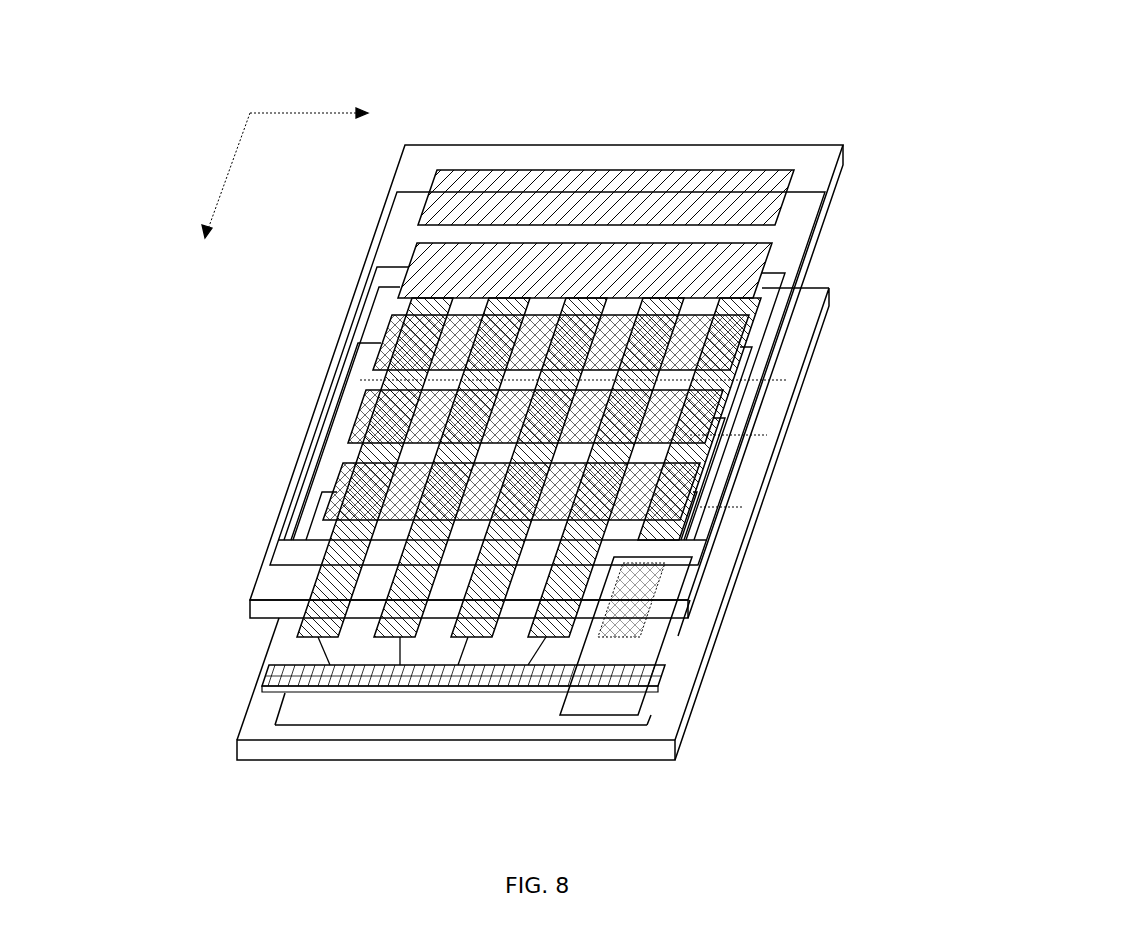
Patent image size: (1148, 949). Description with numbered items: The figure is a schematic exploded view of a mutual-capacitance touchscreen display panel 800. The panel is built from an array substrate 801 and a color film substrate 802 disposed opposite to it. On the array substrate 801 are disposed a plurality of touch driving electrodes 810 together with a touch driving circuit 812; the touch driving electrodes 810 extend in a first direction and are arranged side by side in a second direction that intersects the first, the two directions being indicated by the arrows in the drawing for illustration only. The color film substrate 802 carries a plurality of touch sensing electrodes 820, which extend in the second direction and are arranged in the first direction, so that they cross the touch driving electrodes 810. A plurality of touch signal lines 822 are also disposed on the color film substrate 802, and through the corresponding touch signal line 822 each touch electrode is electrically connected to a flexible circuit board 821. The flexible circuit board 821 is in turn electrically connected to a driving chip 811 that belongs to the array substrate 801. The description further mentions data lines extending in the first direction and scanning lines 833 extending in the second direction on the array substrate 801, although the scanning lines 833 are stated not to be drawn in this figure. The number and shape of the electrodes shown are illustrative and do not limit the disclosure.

The display panel 800 is at (874, 30).
The array substrate 801 is at (783, 403).
The color film substrate 802 is at (823, 172).
The touch driving electrodes 810 is at (296, 630).
The driving chip 811 is at (293, 710).
The touch driving circuit 812 is at (262, 689).
The touch sensing electrodes 820 is at (656, 186).
The flexible circuit board 821 is at (614, 705).
The touch signal lines 822 is at (362, 381).
The scanning lines 833 is at (753, 437).